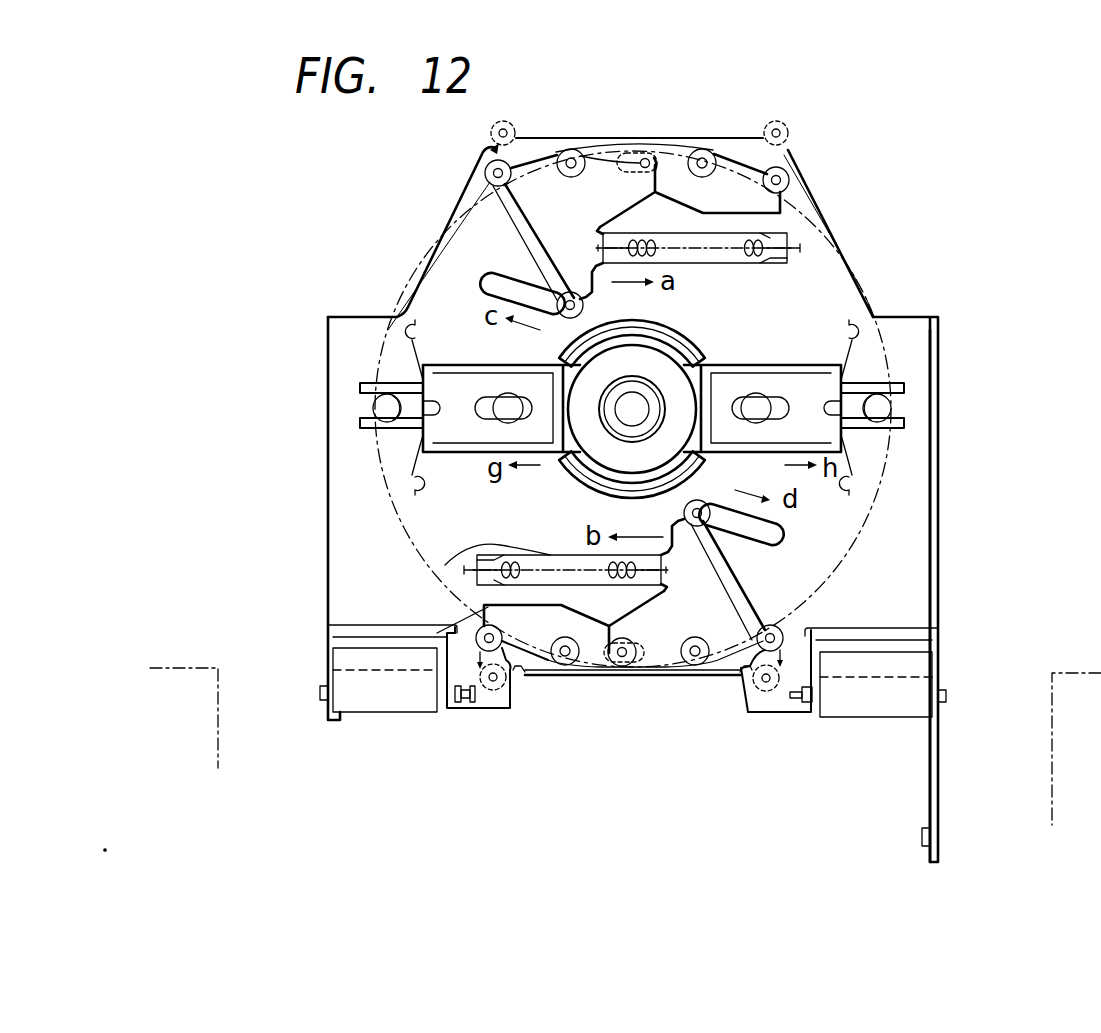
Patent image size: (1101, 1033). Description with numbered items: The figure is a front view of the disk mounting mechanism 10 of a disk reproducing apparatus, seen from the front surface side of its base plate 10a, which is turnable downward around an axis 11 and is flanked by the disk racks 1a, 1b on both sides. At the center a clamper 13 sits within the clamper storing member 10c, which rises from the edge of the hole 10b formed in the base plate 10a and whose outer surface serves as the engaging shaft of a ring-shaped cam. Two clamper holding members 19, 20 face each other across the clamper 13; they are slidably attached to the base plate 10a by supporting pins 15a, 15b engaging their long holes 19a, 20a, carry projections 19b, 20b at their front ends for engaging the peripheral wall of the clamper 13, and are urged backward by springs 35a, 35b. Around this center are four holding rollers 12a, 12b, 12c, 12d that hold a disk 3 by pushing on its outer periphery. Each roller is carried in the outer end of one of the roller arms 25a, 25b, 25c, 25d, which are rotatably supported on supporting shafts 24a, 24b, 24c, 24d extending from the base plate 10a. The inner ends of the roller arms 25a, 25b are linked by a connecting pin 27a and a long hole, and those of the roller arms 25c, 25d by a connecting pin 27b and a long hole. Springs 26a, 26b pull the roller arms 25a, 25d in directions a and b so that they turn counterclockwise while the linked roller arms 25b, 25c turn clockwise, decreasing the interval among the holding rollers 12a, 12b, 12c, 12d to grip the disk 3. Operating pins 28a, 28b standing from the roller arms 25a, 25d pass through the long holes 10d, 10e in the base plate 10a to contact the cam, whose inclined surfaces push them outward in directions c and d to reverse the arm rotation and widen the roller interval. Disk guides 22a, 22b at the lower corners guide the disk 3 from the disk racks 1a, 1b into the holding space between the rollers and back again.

The disk rack 1a is at (218, 668).
The disk rack 1b is at (1075, 673).
The disk 3 is at (352, 318).
The disk mounting mechanism 10 is at (972, 427).
The base plate 10a is at (900, 540).
The hole 10b is at (652, 323).
The clamper storing member 10c is at (770, 322).
The long hole 10d is at (492, 284).
The long hole 10e is at (775, 545).
The axis 11 is at (322, 690).
The holding roller 12a is at (482, 156).
The holding roller 12b is at (790, 172).
The holding roller 12c is at (514, 676).
The holding roller 12d is at (748, 678).
The clamper 13 is at (870, 322).
The supporting pin 15a is at (505, 402).
The supporting pin 15b is at (760, 405).
The clamper holding member 19 is at (445, 435).
The long hole 19a is at (412, 385).
The projection 19b is at (510, 455).
The clamper holding member 20 is at (817, 432).
The long hole 20a is at (858, 392).
The projection 20b is at (740, 463).
The disk guide 22a is at (385, 658).
The disk guide 22b is at (882, 660).
The supporting shaft 24a is at (571, 149).
The supporting shaft 24b is at (704, 149).
The supporting shaft 24c is at (566, 666).
The supporting shaft 24d is at (696, 666).
The roller arm 25a is at (527, 228).
The roller arm 25b is at (770, 200).
The roller arm 25c is at (433, 640).
The roller arm 25d is at (795, 640).
The spring 26a is at (735, 250).
The spring 26b is at (555, 563).
The connecting pin 27a is at (646, 150).
The connecting pin 27b is at (622, 668).
The operating pin 28a is at (527, 255).
The operating pin 28b is at (737, 600).
The spring 35a is at (415, 382).
The spring 35b is at (860, 368).